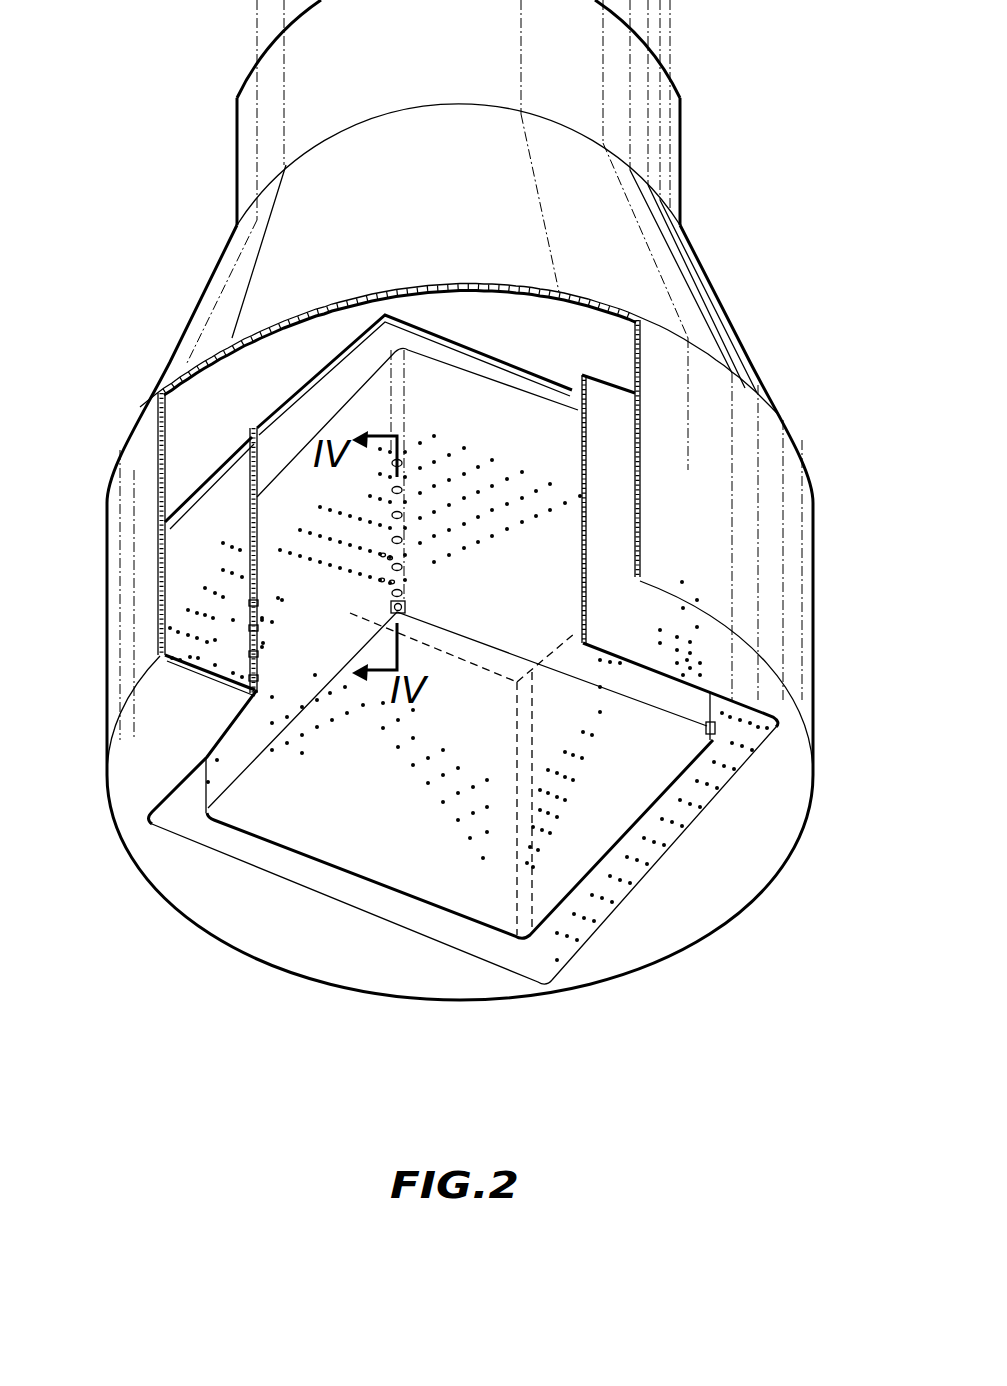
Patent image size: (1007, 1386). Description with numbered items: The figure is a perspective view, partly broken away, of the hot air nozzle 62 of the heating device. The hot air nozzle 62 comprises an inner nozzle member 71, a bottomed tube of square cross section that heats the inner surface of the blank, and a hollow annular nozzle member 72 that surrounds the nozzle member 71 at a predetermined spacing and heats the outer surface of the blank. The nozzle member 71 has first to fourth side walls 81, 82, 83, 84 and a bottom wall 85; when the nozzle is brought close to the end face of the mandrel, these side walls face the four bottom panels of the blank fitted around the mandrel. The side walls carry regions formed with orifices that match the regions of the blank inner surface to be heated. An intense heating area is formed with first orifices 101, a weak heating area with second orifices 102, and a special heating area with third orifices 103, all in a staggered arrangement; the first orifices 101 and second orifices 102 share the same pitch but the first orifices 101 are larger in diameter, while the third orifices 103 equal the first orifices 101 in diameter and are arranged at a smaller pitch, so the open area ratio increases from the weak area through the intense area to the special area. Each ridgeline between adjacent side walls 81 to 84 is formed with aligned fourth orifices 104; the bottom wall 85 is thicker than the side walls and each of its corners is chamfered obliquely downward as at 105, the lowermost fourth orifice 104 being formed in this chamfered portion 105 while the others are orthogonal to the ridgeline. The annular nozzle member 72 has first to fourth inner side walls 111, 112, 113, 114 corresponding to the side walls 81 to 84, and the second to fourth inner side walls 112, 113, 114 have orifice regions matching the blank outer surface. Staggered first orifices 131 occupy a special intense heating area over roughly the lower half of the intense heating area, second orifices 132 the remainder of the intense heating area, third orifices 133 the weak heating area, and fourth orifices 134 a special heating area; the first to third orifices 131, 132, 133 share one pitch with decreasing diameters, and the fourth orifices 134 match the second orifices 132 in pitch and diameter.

The hot air nozzle 62 is at (767, 157).
The nozzle member 71 is at (310, 862).
The hollow annular nozzle member 72 is at (355, 993).
The first side wall 81 is at (490, 400).
The second side wall 82 is at (357, 407).
The third side wall 83 is at (303, 827).
The fourth side wall 84 is at (590, 848).
The bottom wall 85 is at (461, 891).
The first orifices 101 is at (433, 567).
The second orifices 102 is at (558, 483).
The third orifices 103 is at (707, 686).
The fourth orifices 104 is at (395, 593).
The chamfered portion 105 is at (412, 613).
The first inner side wall 111 is at (585, 497).
The second inner side wall 112 is at (250, 480).
The third inner side wall 113 is at (218, 840).
The fourth inner side wall 114 is at (690, 812).
The first orifices 131 is at (232, 647).
The second orifices 132 is at (200, 660).
The third orifices 133 is at (207, 590).
The fourth orifices 134 is at (703, 620).